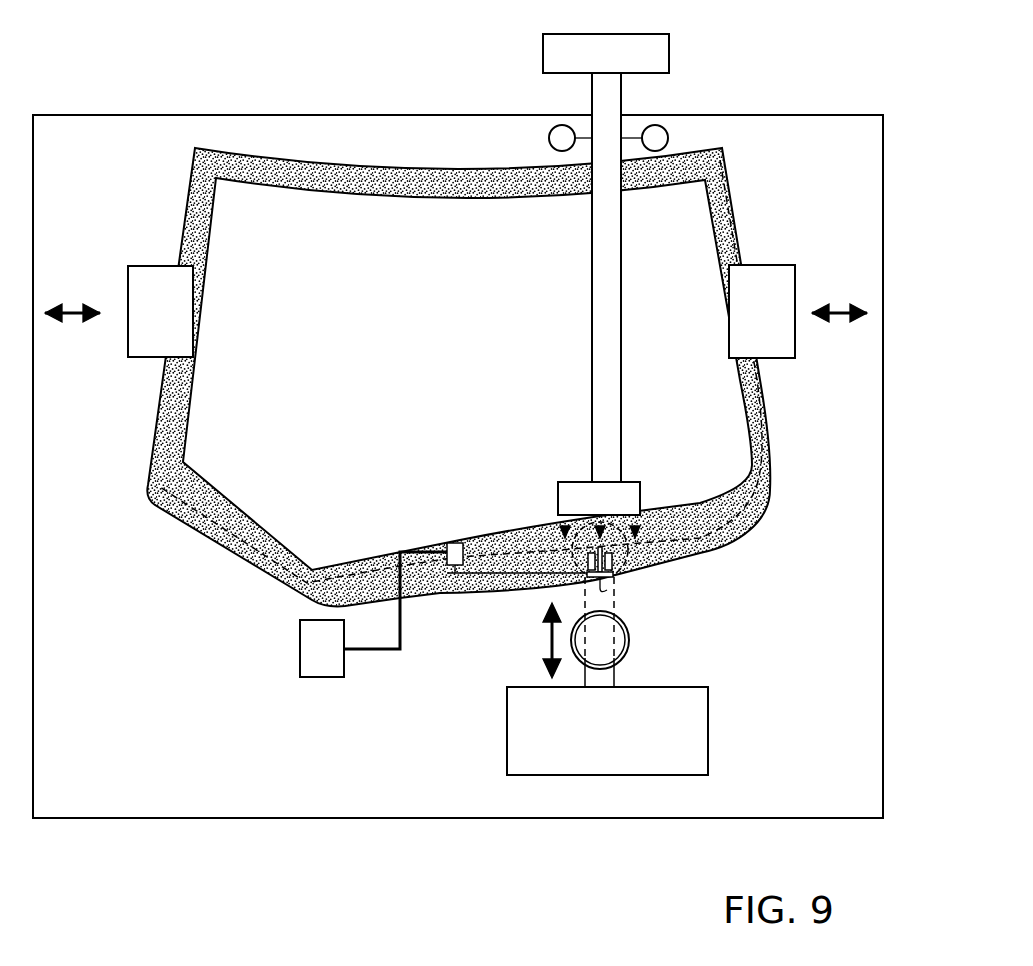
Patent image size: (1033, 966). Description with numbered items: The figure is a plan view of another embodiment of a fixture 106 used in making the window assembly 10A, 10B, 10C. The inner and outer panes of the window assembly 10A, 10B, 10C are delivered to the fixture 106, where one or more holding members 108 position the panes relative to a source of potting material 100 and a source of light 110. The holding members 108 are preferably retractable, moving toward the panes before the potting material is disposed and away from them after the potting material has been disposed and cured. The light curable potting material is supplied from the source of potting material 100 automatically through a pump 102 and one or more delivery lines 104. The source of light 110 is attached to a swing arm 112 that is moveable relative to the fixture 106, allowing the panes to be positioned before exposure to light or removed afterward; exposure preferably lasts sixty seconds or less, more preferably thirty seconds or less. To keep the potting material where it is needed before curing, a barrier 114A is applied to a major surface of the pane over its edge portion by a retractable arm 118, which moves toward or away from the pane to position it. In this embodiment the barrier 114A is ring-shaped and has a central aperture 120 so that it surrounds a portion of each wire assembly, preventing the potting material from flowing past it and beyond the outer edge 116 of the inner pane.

The window assembly 10A is at (521, 377).
The window assembly 10B is at (521, 377).
The window assembly 10C is at (733, 200).
The source of potting material 100 is at (300, 648).
The pump 102 is at (452, 572).
The delivery lines 104 is at (497, 577).
The fixture 106 is at (883, 467).
The holding members 108 is at (128, 285).
The source of light 110 is at (635, 492).
The swing arm 112 is at (622, 103).
The barrier 114A is at (620, 619).
The outer edge 116 is at (630, 575).
The arm 118 is at (615, 676).
The central aperture 120 is at (628, 657).